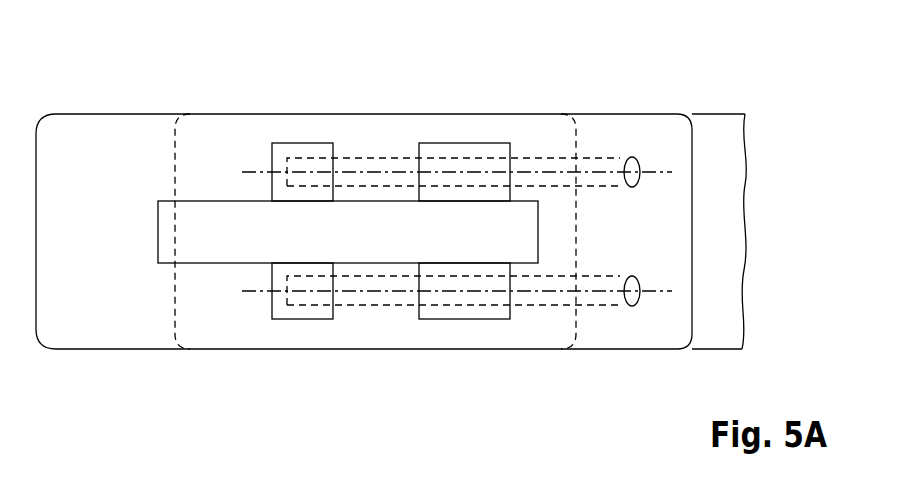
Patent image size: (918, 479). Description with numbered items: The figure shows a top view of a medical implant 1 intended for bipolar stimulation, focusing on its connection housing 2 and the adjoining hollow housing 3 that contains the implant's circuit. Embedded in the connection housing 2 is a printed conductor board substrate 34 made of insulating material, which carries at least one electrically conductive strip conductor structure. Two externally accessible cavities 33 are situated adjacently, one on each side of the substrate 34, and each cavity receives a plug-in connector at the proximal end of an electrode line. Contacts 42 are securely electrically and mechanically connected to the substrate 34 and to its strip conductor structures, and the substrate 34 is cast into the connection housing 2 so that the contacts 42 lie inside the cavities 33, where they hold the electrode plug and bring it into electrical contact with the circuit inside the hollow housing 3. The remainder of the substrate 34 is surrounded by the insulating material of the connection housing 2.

The medical implant 1 is at (78, 72).
The connection housing 2 is at (230, 128).
The hollow housing 3 is at (724, 237).
The cavities 33 is at (602, 170).
The substrate 34 is at (180, 232).
The contacts 42 is at (303, 143).